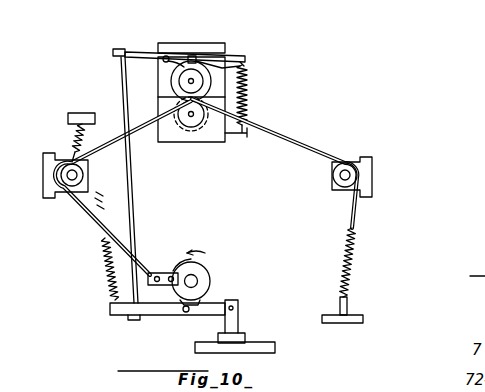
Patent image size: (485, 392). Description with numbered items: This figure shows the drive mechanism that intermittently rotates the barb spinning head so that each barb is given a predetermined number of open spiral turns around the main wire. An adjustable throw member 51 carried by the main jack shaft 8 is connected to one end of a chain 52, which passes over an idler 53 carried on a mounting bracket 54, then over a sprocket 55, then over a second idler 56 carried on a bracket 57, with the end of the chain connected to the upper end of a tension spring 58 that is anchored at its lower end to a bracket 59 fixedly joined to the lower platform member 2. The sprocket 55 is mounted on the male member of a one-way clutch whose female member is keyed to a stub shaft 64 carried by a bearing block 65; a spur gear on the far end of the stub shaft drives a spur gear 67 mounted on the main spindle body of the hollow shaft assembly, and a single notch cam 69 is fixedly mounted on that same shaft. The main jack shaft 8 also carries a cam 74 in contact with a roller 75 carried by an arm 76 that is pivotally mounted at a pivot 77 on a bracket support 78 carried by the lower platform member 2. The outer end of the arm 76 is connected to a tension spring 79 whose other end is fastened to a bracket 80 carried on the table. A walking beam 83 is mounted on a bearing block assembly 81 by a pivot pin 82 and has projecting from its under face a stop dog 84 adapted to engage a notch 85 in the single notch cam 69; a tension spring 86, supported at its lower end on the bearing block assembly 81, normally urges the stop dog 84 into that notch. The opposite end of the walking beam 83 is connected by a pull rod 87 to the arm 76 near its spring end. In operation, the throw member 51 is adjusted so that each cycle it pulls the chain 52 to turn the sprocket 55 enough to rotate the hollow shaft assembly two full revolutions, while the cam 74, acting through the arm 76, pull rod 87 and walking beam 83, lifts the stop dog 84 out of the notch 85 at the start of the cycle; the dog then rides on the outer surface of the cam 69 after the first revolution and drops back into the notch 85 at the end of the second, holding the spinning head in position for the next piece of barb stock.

The lower platform member 2 is at (275, 349).
The main jack shaft 8 is at (198, 281).
The adjustable throw member 51 is at (165, 273).
The chain 52 is at (78, 222).
The idler 53 is at (84, 175).
The mounting bracket 54 is at (43, 174).
The sprocket 55 is at (202, 124).
The idler 56 is at (333, 175).
The bracket 57 is at (372, 173).
The tension spring 58 is at (354, 258).
The bracket 59 is at (352, 313).
The stub shaft 64 is at (192, 117).
The bearing block 65 is at (172, 143).
The spur gear 67 is at (186, 83).
The single notch cam 69 is at (178, 77).
The cam 74 is at (178, 266).
The roller 75 is at (186, 317).
The arm 76 is at (160, 318).
The pivot 77 is at (240, 303).
The bracket support 78 is at (240, 323).
The tension spring 79 is at (102, 268).
The bracket 80 is at (68, 118).
The bearing block assembly 81 is at (218, 43).
The pivot pin 82 is at (165, 56).
The walking beam 83 is at (232, 54).
The stop dog 84 is at (192, 55).
The notch 85 is at (244, 67).
The tension spring 86 is at (248, 93).
The pull rod 87 is at (136, 201).